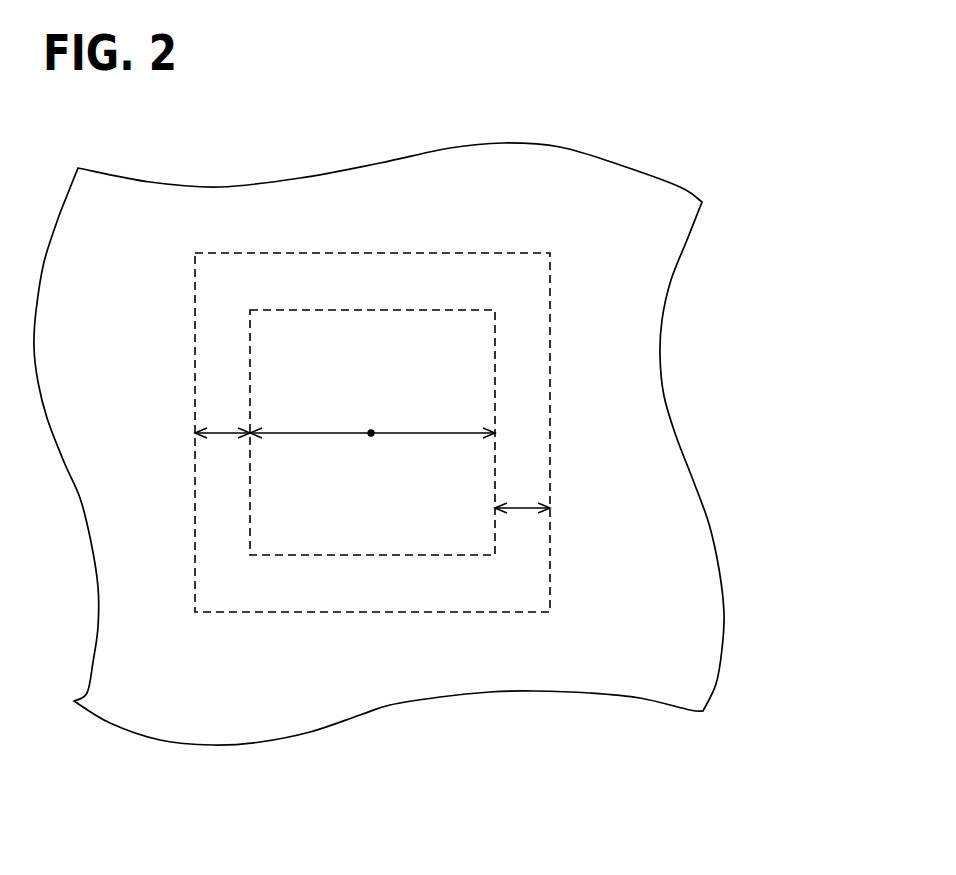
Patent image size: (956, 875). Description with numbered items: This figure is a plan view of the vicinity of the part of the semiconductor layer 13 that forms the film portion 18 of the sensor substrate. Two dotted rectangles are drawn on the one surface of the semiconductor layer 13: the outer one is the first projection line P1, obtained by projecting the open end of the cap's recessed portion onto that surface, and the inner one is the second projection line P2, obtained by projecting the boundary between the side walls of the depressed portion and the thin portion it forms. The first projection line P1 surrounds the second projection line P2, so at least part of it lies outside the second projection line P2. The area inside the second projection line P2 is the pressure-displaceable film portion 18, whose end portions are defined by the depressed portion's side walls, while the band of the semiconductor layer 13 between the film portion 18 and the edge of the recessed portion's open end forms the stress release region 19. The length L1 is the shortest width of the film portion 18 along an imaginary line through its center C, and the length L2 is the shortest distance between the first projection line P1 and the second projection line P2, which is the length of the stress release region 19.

The semiconductor layer 13 is at (653, 513).
The first projection line P1 is at (548, 340).
The second projection line P2 is at (493, 455).
The film portion 18 is at (387, 487).
The stress release region 19 is at (522, 513).
The length of the film portion L1 is at (372, 421).
The length of the stress release region L2 is at (222, 421).
The center C is at (370, 448).